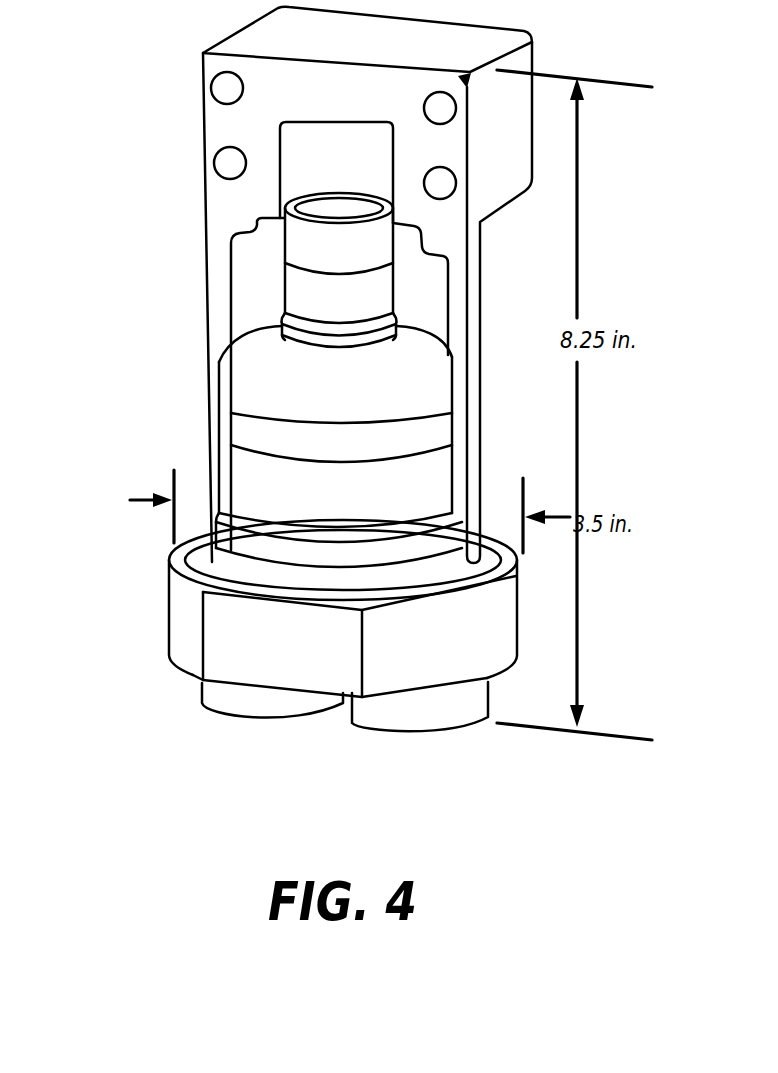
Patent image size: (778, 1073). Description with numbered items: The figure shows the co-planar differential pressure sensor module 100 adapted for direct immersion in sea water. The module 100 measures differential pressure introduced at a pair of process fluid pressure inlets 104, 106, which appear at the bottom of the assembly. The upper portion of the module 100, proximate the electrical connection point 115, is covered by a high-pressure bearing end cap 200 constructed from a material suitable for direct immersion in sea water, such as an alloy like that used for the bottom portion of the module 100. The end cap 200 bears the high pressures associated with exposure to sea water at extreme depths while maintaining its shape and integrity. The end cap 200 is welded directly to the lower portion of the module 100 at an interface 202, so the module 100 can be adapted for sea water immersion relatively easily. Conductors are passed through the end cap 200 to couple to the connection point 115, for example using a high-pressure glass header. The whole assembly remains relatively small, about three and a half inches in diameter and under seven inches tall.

The co-planar differential pressure sensor module 100 is at (298, 507).
The process fluid pressure inlet 104 is at (247, 707).
The process fluid pressure inlet 106 is at (428, 720).
The electrical connection point 115 is at (397, 296).
The high-pressure bearing end cap 200 is at (305, 285).
The interface 202 is at (215, 548).